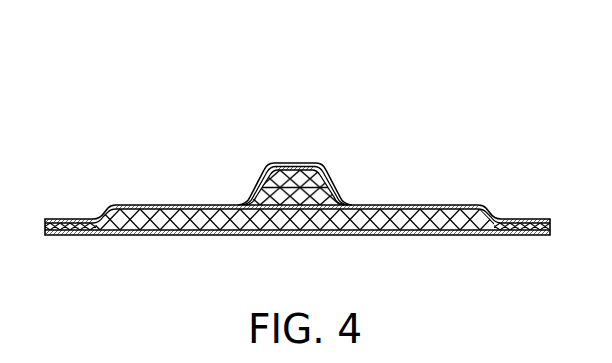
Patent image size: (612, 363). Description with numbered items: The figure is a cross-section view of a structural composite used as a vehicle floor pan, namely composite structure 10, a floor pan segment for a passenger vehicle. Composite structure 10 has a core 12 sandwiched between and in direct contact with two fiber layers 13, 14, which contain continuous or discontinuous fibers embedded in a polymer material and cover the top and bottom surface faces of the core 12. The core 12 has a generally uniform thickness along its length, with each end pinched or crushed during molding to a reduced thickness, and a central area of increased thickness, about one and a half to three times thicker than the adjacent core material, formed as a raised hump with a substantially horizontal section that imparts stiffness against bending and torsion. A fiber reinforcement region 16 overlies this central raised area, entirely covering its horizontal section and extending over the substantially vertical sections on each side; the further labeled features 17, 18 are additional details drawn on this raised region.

The composite structure 10 is at (243, 115).
The core 12 is at (190, 233).
The fiber layer 13 is at (410, 205).
The fiber layer 14 is at (285, 234).
The fiber reinforcement region 16 is at (260, 184).
The protrusion interior partition 17 is at (322, 188).
The protrusion top layer 18 is at (278, 178).